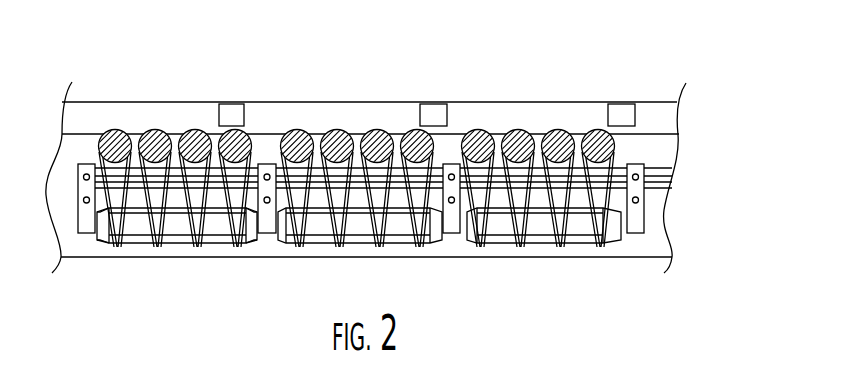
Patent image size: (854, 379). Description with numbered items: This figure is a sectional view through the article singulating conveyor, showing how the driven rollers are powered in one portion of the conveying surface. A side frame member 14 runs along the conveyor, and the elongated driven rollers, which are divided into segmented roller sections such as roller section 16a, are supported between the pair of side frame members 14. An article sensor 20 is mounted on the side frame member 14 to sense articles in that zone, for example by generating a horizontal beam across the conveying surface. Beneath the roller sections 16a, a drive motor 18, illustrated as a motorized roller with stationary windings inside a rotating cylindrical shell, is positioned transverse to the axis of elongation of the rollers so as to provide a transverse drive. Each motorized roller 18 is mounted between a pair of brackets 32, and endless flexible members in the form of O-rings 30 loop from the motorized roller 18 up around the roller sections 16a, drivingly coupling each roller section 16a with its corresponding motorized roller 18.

The side frame member 14 is at (658, 101).
The roller section 16a is at (101, 135).
The drive motor 18 is at (136, 246).
The article sensor 20 is at (228, 103).
The O-ring 30 is at (160, 228).
The bracket 32 is at (90, 213).